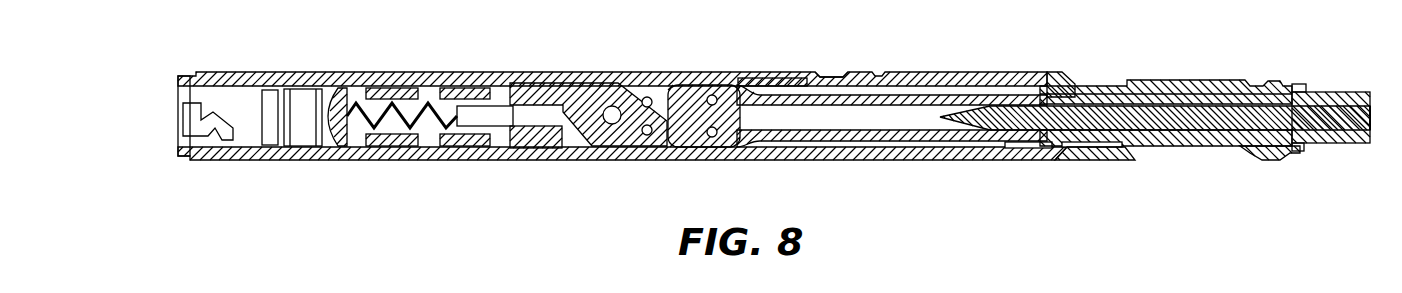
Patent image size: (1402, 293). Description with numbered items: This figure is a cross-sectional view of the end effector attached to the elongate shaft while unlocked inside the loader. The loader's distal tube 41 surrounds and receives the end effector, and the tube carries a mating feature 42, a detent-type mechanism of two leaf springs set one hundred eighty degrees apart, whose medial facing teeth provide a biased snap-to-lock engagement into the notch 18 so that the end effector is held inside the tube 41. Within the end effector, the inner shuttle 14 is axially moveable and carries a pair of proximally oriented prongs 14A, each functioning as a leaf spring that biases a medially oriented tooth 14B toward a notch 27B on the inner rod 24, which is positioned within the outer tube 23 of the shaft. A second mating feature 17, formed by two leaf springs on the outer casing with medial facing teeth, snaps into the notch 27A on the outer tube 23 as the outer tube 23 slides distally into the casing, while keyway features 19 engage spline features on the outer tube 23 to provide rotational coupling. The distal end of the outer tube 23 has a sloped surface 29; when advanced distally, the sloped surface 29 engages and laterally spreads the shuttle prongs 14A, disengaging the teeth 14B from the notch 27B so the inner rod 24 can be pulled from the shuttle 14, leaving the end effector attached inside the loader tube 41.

The distal tube 41 is at (492, 162).
The inner shuttle 14 is at (693, 152).
The mating feature 42 is at (790, 72).
The notch 18 is at (838, 66).
The proximally oriented prongs 14A is at (932, 80).
The medially oriented tooth 14B is at (990, 142).
The notch 27B is at (1002, 168).
The sloped surface 29 is at (1045, 78).
The keyway features 19 is at (1085, 82).
The mating feature 17 is at (1208, 80).
The notch 27A is at (1258, 152).
The outer tube 23 is at (1330, 92).
The inner rod 24 is at (1372, 117).